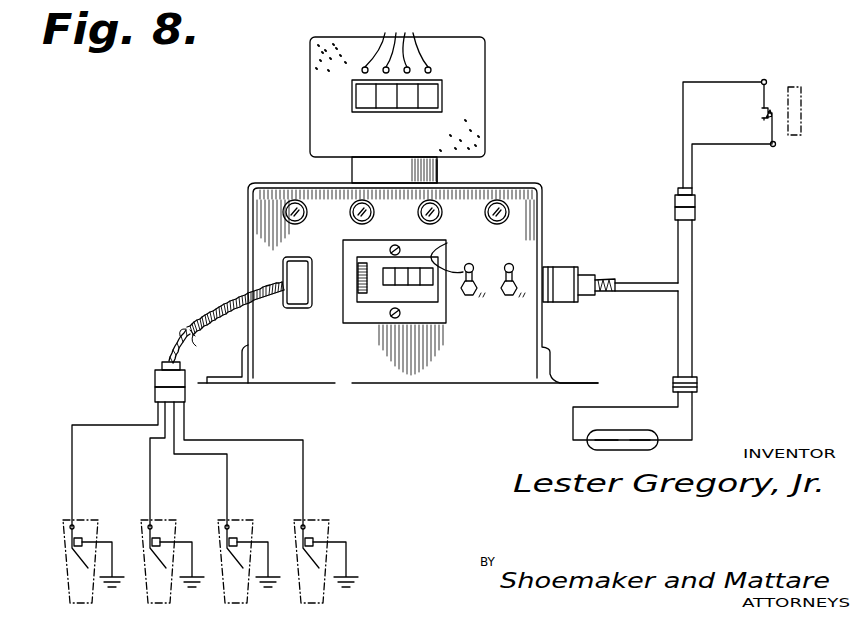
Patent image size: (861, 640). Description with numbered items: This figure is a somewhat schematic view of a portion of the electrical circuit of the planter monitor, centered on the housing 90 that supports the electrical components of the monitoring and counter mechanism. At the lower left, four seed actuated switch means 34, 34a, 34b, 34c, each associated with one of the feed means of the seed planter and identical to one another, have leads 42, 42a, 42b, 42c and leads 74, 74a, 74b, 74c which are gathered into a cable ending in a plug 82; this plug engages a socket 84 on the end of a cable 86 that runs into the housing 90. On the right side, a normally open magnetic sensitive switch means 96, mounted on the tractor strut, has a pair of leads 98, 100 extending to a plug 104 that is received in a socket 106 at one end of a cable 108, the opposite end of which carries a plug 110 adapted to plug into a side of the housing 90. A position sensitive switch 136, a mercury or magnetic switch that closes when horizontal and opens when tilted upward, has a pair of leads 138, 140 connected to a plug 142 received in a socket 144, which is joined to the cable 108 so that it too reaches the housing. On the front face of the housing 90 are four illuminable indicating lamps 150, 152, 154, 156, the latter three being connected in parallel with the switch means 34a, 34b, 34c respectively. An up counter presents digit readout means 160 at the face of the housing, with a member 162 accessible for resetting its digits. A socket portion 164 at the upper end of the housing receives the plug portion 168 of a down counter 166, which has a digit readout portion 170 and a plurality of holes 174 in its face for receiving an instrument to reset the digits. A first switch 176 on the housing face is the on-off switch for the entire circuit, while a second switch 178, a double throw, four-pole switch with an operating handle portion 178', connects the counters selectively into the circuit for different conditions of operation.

The seed actuated switch means 34 is at (80, 565).
The seed actuated switch means 34a is at (158, 570).
The seed actuated switch means 34b is at (235, 575).
The seed actuated switch means 34c is at (312, 575).
The lead 42 is at (72, 478).
The lead 42a is at (150, 494).
The lead 42b is at (227, 482).
The lead 42c is at (303, 478).
The lead 74 is at (105, 540).
The lead 74a is at (187, 540).
The lead 74b is at (265, 540).
The lead 74c is at (340, 540).
The plug 82 is at (180, 394).
The socket 84 is at (154, 378).
The cable 86 is at (212, 318).
The housing 90 is at (343, 386).
The magnetic sensitive switch means 96 is at (787, 84).
The lead 98 is at (700, 82).
The lead 100 is at (718, 145).
The plug 104 is at (697, 201).
The socket 106 is at (697, 213).
The cable 108 is at (606, 279).
The plug 110 is at (560, 270).
The position sensitive switch 136 is at (631, 429).
The lead 138 is at (573, 422).
The lead 140 is at (693, 425).
The plug 142 is at (697, 389).
The socket 144 is at (697, 379).
The indicating lamp 150 is at (296, 192).
The indicating lamp 152 is at (377, 212).
The indicating lamp 154 is at (449, 210).
The indicating lamp 156 is at (505, 203).
The digit readout means 160 is at (392, 302).
The member 162 is at (357, 276).
The socket portion 164 is at (440, 181).
The down counter 166 is at (488, 87).
The plug portion 168 is at (354, 168).
The digit readout portion 170 is at (350, 97).
The holes 174 is at (396, 42).
The first switch 176 is at (527, 297).
The second switch 178 is at (490, 259).
The operating handle portion 178' is at (458, 248).